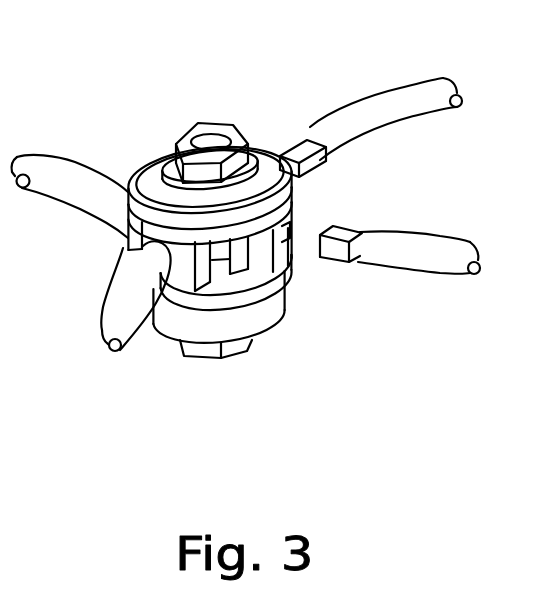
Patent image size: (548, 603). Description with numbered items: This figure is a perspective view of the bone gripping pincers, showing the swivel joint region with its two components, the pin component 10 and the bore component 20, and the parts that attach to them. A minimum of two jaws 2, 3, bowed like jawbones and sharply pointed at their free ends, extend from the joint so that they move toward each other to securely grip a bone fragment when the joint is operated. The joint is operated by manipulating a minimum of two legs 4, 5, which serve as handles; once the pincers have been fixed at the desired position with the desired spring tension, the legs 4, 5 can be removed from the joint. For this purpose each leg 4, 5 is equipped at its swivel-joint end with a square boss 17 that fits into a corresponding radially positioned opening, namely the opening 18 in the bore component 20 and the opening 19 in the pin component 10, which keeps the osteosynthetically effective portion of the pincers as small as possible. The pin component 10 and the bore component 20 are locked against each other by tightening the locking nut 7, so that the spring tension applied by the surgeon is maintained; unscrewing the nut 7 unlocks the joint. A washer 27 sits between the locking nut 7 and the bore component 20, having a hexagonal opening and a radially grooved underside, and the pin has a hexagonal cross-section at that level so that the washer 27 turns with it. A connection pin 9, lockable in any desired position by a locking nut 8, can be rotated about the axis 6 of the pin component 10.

The jaw 2 is at (122, 327).
The jaw 3 is at (60, 173).
The leg 4 is at (383, 112).
The leg 5 is at (428, 253).
The axis of the swivel pin component 6 is at (207, 143).
The locking nut 7 is at (228, 122).
The locking nut 8 is at (237, 350).
The connection pin 9 is at (180, 320).
The pin component 10 is at (124, 226).
The square boss 17 is at (300, 150).
The opening 18 is at (297, 234).
The opening 19 is at (296, 194).
The bore component 20 is at (143, 244).
The washer 27 is at (137, 115).